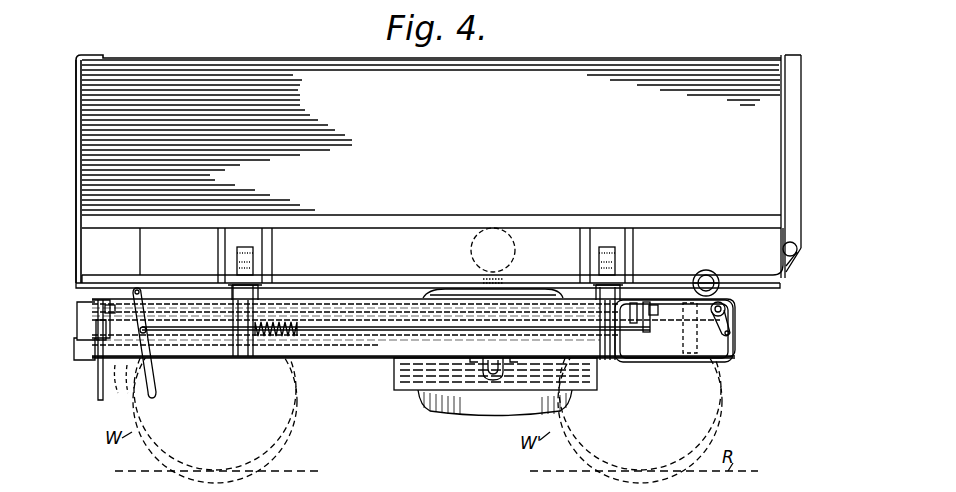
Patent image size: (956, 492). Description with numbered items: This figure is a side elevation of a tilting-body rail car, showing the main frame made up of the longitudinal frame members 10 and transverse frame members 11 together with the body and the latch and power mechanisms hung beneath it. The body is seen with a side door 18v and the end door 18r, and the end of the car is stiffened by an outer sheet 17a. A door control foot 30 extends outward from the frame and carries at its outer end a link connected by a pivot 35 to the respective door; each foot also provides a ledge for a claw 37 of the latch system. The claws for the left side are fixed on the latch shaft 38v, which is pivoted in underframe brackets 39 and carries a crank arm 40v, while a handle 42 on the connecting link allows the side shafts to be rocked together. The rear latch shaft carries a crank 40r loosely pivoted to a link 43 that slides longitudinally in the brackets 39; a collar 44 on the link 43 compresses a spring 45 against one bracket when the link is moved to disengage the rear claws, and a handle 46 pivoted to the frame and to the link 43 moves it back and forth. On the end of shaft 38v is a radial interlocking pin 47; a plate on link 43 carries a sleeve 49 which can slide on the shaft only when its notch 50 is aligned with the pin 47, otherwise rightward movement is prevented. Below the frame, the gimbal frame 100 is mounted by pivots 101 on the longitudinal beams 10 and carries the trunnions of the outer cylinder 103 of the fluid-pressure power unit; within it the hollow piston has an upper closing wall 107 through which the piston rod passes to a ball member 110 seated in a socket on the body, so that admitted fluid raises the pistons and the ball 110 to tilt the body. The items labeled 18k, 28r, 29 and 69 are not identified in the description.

The longitudinal frame member 10 is at (683, 360).
The transverse frame member 11 is at (98, 318).
The outer sheet 17a is at (77, 158).
The side door 18v is at (428, 169).
The end door 18r is at (796, 121).
The post bracket 18k is at (797, 260).
The pivot bracket 28r is at (738, 305).
The pin 29 is at (717, 290).
The door control foot 30 is at (268, 298).
The pivot 35 is at (797, 250).
The claw 37 is at (228, 292).
The latch shaft 38v is at (358, 306).
The underframe bracket 39 is at (96, 300).
The crank arm 40v is at (101, 306).
The crank 40r is at (731, 326).
The handle 42 is at (99, 398).
The link 43 is at (388, 334).
The collar 44 is at (298, 332).
The spring 45 is at (282, 338).
The handle 46 is at (156, 386).
The interlocking pin 47 is at (651, 304).
The sleeve 49 is at (634, 304).
The notch 50 is at (658, 312).
The bolt 69 is at (248, 290).
The gimbal frame 100 is at (398, 389).
The pivot 101 is at (490, 360).
The outer cylinder 103 is at (452, 415).
The upper closing wall 107 is at (437, 292).
The ball member 110 is at (512, 228).